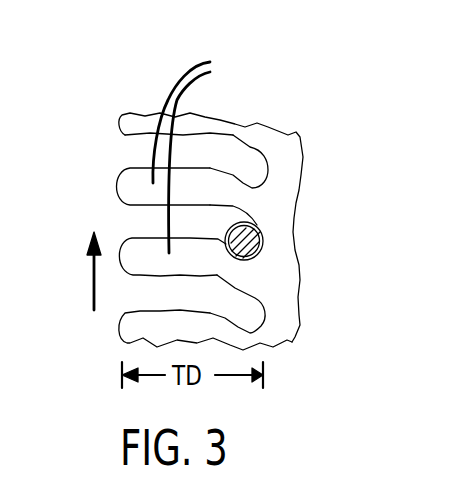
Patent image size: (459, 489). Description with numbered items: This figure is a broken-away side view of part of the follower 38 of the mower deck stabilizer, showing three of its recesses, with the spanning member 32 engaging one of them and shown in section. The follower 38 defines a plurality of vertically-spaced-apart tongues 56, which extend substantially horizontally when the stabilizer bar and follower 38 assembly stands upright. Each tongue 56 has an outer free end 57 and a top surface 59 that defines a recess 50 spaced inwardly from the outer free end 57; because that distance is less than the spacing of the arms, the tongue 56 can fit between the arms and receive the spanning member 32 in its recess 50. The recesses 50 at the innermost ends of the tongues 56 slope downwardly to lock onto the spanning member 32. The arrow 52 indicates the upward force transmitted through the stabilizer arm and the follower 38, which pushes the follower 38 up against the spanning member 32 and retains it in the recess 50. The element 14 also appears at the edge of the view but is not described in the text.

The tire tread 14 is at (146, 6).
The reinforcement cord 32 is at (260, 245).
The tread block 38 is at (332, 117).
The rounded groove end 50 is at (256, 181).
The circumferential direction arrow 52 is at (94, 276).
The sipe lines 56 is at (197, 149).
The second tread finger 57 is at (118, 183).
The bottom tread finger 59 is at (172, 310).